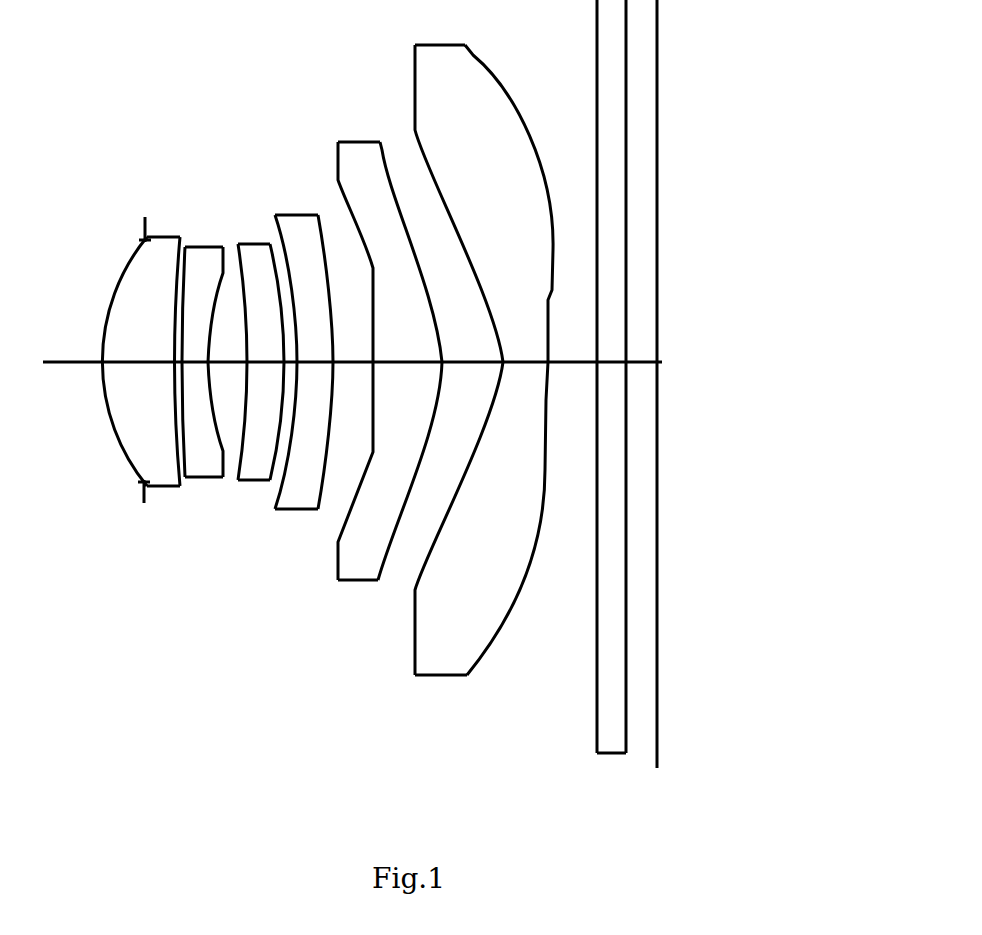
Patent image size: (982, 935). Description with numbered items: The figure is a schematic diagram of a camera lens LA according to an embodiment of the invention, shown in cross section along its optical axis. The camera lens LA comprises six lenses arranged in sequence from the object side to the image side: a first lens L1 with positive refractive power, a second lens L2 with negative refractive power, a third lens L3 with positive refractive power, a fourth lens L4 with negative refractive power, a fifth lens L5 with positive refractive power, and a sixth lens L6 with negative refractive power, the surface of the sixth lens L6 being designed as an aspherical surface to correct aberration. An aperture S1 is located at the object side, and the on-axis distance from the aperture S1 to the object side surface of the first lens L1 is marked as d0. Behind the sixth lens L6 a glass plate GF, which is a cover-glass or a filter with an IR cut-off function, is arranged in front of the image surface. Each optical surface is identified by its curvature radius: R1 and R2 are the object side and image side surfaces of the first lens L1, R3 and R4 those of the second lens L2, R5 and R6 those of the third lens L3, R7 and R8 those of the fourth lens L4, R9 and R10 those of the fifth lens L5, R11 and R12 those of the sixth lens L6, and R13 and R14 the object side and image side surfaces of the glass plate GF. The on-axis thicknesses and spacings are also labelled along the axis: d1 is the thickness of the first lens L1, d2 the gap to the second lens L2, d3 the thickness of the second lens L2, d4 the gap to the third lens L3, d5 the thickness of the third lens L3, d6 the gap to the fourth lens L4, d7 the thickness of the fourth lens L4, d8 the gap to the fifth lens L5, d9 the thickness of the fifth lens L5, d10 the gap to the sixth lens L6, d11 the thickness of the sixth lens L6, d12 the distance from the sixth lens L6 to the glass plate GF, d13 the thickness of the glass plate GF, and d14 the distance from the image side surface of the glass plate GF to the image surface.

The camera lens LA is at (127, 67).
The aperture S1 is at (144, 216).
The distance on-axis from aperture to object side surface of first lens d0 is at (100, 300).
The first lens L1 is at (106, 361).
The second lens L2 is at (169, 405).
The third lens L3 is at (240, 431).
The fourth lens L4 is at (295, 452).
The fifth lens L5 is at (386, 425).
The sixth lens L6 is at (467, 400).
The glass plate GF is at (567, 387).
The curvature radius of object side surface of first lens R1 is at (95, 366).
The curvature radius of image side surface of first lens R2 is at (172, 372).
The curvature radius of object side surface of second lens R3 is at (180, 390).
The curvature radius of image side surface of second lens R4 is at (210, 393).
The curvature radius of object side surface of third lens R5 is at (247, 392).
The curvature radius of image side surface of third lens R6 is at (287, 392).
The curvature radius of object side surface of fourth lens R7 is at (296, 410).
The curvature radius of image side surface of fourth lens R8 is at (333, 405).
The curvature radius of object side surface of fifth lens R9 is at (373, 425).
The curvature radius of image side surface of fifth lens R10 is at (435, 412).
The curvature radius of object side surface of sixth lens R11 is at (470, 452).
The curvature radius of image side surface of sixth lens R12 is at (543, 458).
The curvature radius of object side surface of glass plate R13 is at (592, 540).
The curvature radius of image side surface of glass plate R14 is at (622, 552).
The thickness on-axis of first lens d1 is at (132, 348).
The distance on-axis from first lens to second lens d2 is at (186, 335).
The thickness on-axis of second lens d3 is at (191, 348).
The distance on-axis from second lens to third lens d4 is at (224, 348).
The thickness on-axis of third lens d5 is at (262, 348).
The distance on-axis from third lens to fourth lens d6 is at (291, 343).
The thickness on-axis of fourth lens d7 is at (312, 348).
The distance on-axis from fourth lens to fifth lens d8 is at (347, 348).
The thickness on-axis of fifth lens d9 is at (404, 348).
The distance on-axis from fifth lens to sixth lens d10 is at (470, 348).
The thickness on-axis of sixth lens d11 is at (523, 348).
The distance on-axis from sixth lens to optical filter d12 is at (568, 348).
The thickness on-axis of optical filter d13 is at (614, 360).
The distance on-axis from image side surface of optical filter to image surface d14 is at (640, 348).